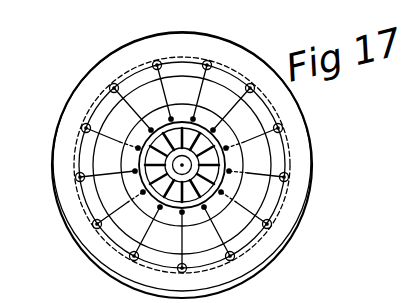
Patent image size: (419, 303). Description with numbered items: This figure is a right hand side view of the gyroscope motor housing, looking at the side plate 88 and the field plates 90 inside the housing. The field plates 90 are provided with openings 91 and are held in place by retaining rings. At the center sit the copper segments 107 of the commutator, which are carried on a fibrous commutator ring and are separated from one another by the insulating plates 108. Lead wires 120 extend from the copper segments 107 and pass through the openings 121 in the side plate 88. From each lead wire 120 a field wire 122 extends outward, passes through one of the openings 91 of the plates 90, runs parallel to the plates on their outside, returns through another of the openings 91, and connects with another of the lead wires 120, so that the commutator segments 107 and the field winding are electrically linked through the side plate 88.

The plates 90 is at (66, 106).
The openings 91 is at (75, 179).
The field wire 122 is at (152, 78).
The side plate 88 is at (134, 159).
The lead wires 120 is at (197, 113).
The openings 121 is at (170, 119).
The insulating plates 108 is at (158, 220).
The copper segments 107 is at (186, 209).